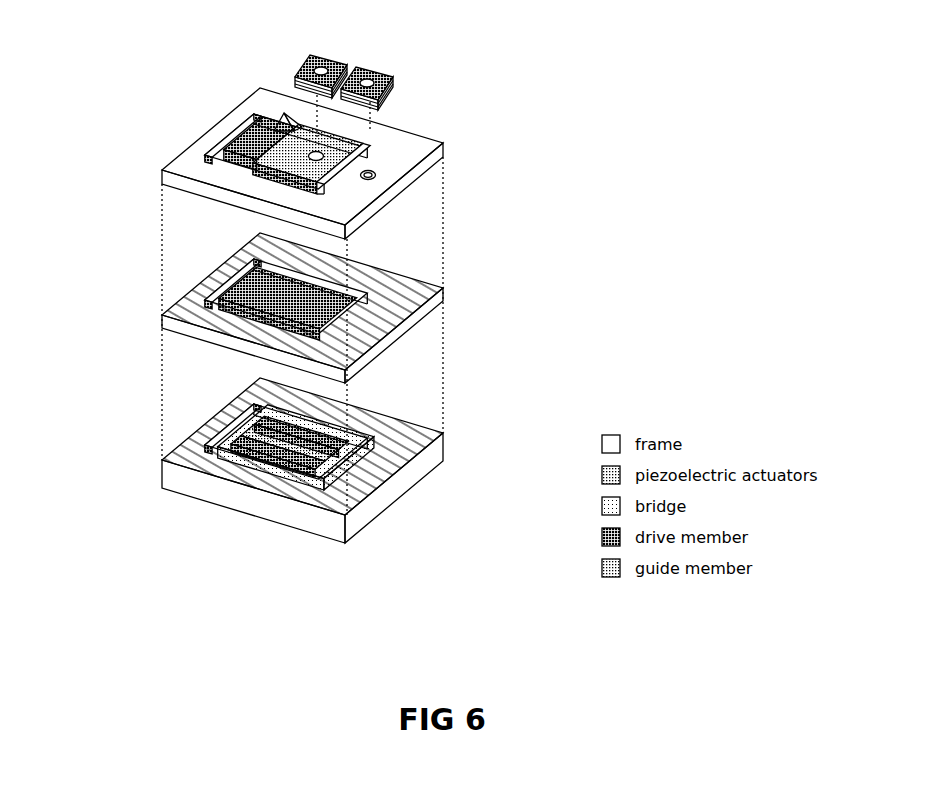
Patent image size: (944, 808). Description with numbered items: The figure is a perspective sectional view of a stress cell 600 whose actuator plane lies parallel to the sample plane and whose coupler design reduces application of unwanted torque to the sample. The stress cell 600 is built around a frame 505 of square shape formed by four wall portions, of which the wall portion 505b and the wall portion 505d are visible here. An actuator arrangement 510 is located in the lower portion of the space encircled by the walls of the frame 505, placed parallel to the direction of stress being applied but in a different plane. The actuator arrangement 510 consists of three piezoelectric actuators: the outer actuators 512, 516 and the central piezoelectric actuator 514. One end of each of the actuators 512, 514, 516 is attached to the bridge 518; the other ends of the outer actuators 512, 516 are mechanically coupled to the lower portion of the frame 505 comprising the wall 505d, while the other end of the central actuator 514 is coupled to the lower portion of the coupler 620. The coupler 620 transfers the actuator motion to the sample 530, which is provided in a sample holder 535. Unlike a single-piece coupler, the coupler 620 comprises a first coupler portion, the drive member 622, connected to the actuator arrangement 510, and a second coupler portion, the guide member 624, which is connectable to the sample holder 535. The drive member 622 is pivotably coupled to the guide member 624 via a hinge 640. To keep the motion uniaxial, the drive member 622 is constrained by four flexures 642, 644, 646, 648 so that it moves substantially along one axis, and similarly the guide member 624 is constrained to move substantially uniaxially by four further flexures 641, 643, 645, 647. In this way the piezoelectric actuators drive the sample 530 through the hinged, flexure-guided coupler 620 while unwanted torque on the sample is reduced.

The stress cell 600 is at (530, 90).
The frame 505 is at (162, 170).
The wall portion 505b is at (362, 130).
The wall portion 505d is at (260, 192).
The sample 530 is at (352, 70).
The sample holder 535 is at (293, 66).
The coupler 620 is at (512, 107).
The drive member 622 is at (300, 128).
The guide member 624 is at (353, 154).
The hinge 640 is at (237, 140).
The flexure 641 is at (248, 160).
The flexure 643 is at (385, 150).
The flexure 644 is at (228, 120).
The flexure 645 is at (263, 97).
The flexure 646 is at (323, 337).
The flexure 647 is at (335, 188).
The flexure 648 is at (208, 158).
The flexure 642 is at (393, 275).
The bridge 518 is at (397, 472).
The actuator arrangement 510 is at (228, 588).
The outer actuator 512 is at (282, 488).
The central piezoelectric actuator 514 is at (327, 493).
The outer actuator 516 is at (352, 487).